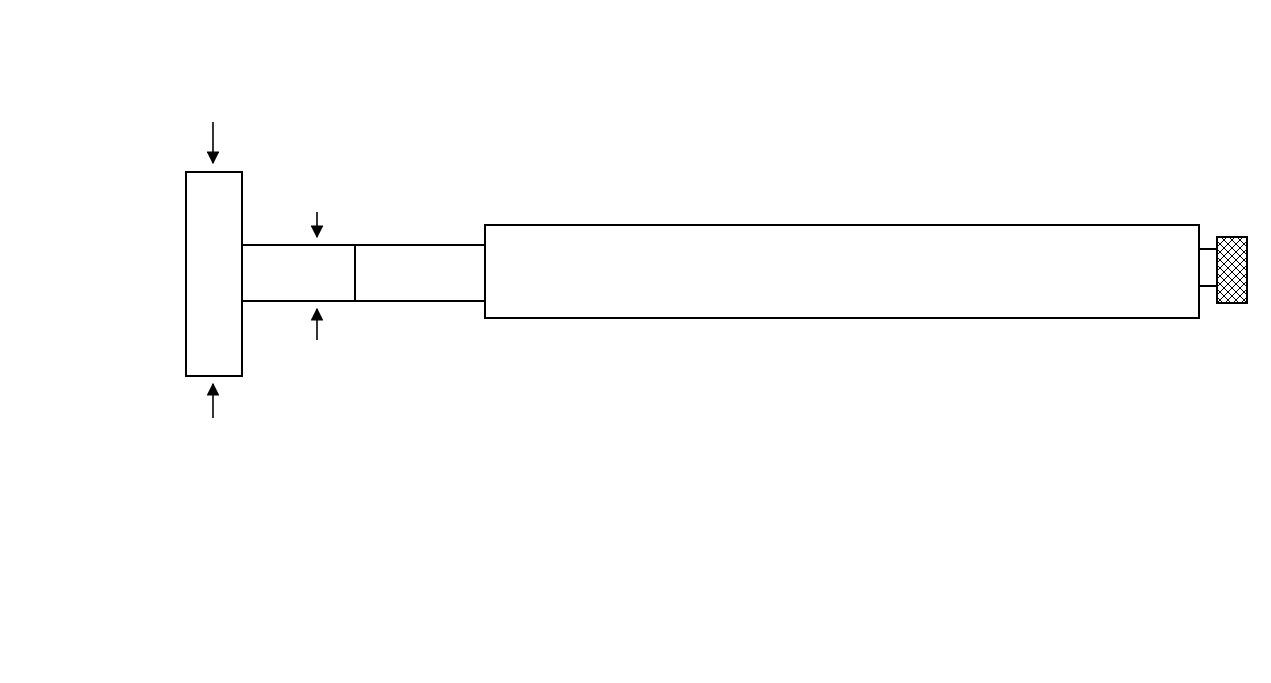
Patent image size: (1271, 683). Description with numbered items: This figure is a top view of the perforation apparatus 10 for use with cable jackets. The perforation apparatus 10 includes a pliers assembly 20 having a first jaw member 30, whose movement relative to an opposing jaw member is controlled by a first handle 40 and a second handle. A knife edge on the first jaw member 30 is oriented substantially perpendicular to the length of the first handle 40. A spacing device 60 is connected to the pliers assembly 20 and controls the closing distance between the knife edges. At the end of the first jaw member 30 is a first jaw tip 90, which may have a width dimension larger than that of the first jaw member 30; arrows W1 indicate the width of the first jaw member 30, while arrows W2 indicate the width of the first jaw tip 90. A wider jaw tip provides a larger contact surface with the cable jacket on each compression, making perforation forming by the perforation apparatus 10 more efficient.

The perforation apparatus 10 is at (580, 140).
The pliers assembly 20 is at (419, 263).
The first jaw member 30 is at (262, 273).
The first handle 40 is at (803, 253).
The spacing device 60 is at (1227, 250).
The first jaw tip 90 is at (232, 208).